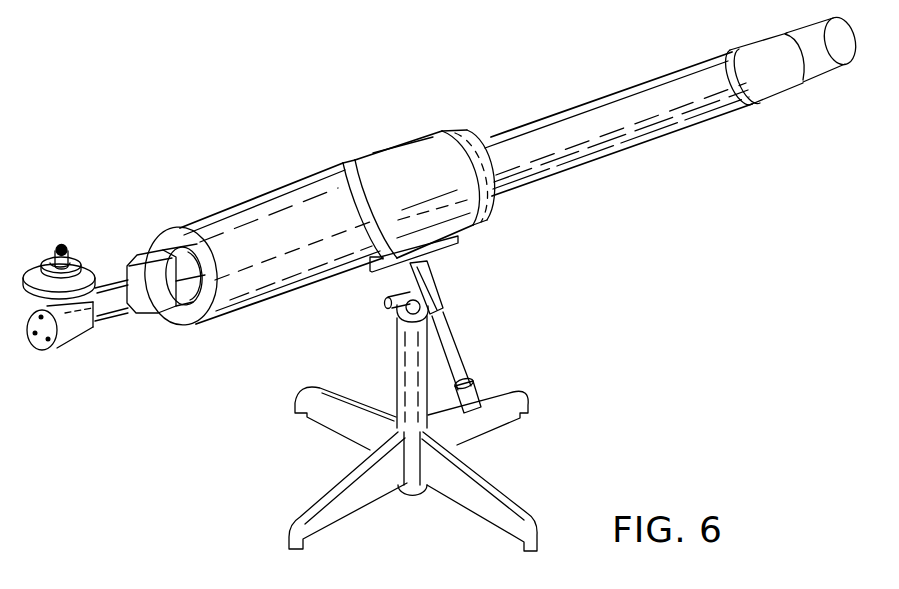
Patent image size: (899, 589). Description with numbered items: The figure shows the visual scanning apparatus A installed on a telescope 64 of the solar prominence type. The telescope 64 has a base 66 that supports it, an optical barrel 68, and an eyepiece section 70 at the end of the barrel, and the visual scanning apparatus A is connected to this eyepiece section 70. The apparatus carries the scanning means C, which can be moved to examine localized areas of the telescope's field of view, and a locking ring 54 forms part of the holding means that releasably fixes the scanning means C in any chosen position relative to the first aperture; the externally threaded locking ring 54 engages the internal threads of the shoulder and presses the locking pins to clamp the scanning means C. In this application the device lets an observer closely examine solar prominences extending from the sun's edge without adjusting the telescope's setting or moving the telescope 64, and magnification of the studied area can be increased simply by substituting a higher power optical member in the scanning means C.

The telescope 64 is at (468, 114).
The base 66 is at (480, 427).
The optical barrel 68 is at (273, 200).
The eyepiece section 70 is at (104, 283).
The locking ring 54 is at (82, 262).
The visual scanning apparatus A is at (45, 233).
The scanning means C is at (62, 245).